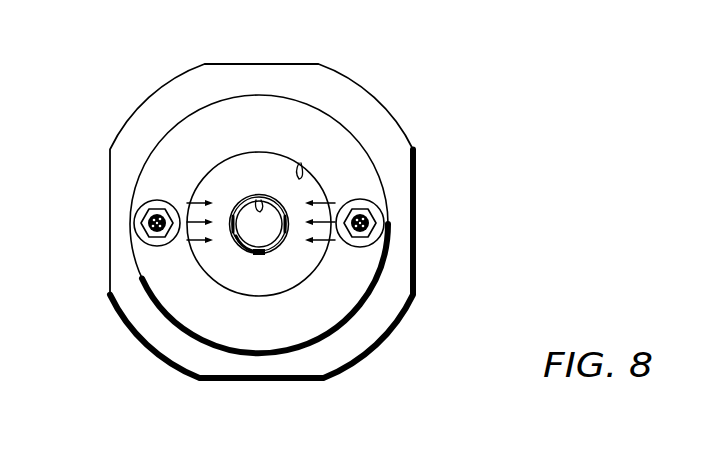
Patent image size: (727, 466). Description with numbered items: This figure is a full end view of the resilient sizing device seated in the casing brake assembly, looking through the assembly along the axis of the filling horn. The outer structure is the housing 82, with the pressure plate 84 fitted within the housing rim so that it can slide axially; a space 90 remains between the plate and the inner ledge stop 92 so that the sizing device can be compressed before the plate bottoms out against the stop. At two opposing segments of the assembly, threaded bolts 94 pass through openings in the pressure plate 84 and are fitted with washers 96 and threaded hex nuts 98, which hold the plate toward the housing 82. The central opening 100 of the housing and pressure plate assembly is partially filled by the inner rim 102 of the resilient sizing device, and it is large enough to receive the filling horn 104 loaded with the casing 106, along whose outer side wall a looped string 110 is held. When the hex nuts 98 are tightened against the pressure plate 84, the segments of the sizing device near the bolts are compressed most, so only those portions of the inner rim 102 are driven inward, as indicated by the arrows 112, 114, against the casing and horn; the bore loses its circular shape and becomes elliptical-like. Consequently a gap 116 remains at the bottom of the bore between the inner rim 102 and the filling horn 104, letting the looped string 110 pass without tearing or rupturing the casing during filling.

The housing 82 is at (377, 313).
The pressure plate 84 is at (347, 168).
The space 90 is at (693, 11).
The inner ledge stop 92 is at (615, 8).
The threaded bolts 94 is at (157, 223).
The washers 96 is at (380, 212).
The threaded hex nuts 98 is at (366, 228).
The central opening 100 is at (300, 167).
The inner rim 102 is at (277, 252).
The filling horn 104 is at (250, 205).
The casing 106 is at (241, 199).
The looped string 110 is at (257, 258).
The arrows 112 is at (200, 253).
The arrows 114 is at (330, 240).
The gap 116 is at (250, 256).